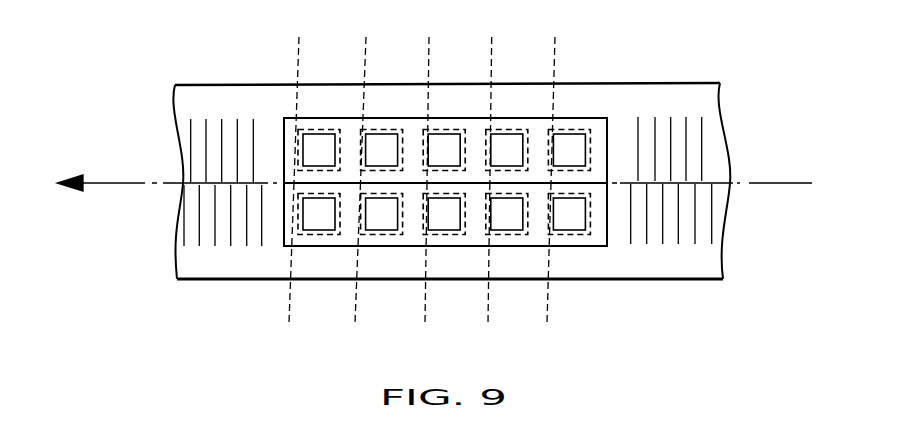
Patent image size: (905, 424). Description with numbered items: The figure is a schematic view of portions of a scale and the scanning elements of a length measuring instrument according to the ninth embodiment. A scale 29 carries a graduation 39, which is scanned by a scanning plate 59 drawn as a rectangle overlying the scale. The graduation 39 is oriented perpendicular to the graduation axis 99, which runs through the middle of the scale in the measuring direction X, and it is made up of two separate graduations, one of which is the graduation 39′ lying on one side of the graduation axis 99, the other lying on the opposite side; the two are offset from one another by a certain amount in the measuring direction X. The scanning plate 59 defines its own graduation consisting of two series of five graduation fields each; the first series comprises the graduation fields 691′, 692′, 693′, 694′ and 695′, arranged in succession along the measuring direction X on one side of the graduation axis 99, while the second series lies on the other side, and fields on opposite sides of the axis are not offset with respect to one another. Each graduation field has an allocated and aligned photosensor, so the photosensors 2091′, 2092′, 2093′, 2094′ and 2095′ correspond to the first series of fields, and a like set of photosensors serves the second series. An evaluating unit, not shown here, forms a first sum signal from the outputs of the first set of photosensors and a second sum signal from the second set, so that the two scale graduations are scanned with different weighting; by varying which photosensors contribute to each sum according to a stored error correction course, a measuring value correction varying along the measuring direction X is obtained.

The scale 29 is at (707, 263).
The graduation 39 is at (182, 233).
The graduation 39′ is at (702, 141).
The scanning plate 59 is at (608, 232).
The graduation axis 99 is at (750, 182).
The graduation field 691′ is at (325, 147).
The graduation field 692′ is at (388, 147).
The graduation field 693′ is at (450, 147).
The graduation field 694′ is at (513, 147).
The graduation field 695′ is at (575, 147).
The photosensor 2091′ is at (297, 98).
The photosensor 2092′ is at (365, 98).
The photosensor 2093′ is at (425, 98).
The photosensor 2094′ is at (487, 98).
The photosensor 2095′ is at (548, 98).